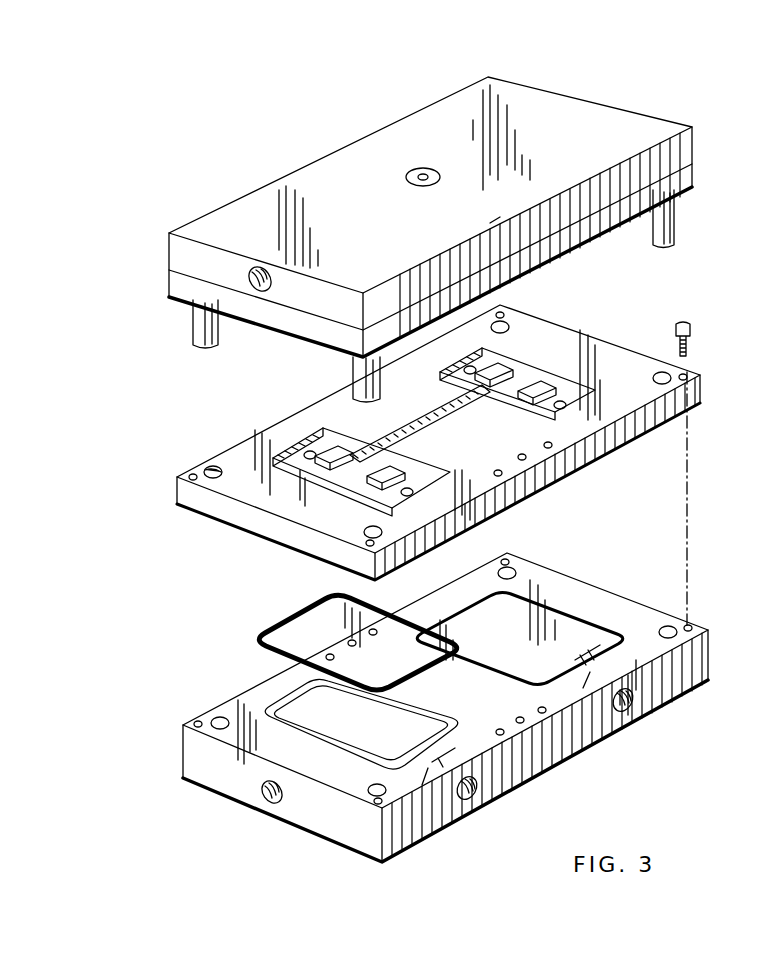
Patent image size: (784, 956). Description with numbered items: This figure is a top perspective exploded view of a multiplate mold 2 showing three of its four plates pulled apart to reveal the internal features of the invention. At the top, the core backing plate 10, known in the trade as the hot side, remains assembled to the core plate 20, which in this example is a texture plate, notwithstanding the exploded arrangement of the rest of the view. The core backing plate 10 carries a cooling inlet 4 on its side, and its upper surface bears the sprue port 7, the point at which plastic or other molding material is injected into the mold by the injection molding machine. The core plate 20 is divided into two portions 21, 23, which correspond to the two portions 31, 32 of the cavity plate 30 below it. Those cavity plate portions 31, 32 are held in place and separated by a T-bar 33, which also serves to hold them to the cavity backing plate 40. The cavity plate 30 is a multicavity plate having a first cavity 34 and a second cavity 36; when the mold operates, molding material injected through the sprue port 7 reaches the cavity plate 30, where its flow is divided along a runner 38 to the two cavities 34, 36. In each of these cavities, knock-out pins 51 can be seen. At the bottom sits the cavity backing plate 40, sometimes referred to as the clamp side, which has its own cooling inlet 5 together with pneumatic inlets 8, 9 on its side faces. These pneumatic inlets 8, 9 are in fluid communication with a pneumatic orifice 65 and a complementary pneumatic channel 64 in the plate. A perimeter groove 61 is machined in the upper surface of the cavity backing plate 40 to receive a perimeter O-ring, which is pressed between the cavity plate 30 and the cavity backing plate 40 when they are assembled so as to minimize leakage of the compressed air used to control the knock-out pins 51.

The multiplate mold 2 is at (280, 152).
The cooling inlet 4 is at (258, 268).
The cooling inlet 5 is at (270, 803).
The sprue port 7 is at (421, 176).
The pneumatic inlet 8 is at (472, 798).
The pneumatic inlet 9 is at (632, 712).
The core backing plate 10 is at (645, 118).
The core plate 20 is at (711, 176).
The core plate portion 21 is at (510, 262).
The core plate portion 23 is at (605, 218).
The cavity plate 30 is at (270, 545).
The cavity plate portion 31 is at (497, 507).
The cavity plate portion 32 is at (573, 458).
The T-bar 33 is at (540, 490).
The first cavity 34 is at (325, 448).
The second cavity 36 is at (540, 375).
The runner 38 is at (395, 445).
The cavity backing plate 40 is at (365, 833).
The knock-out pins 51 is at (485, 363).
The perimeter groove 61 is at (287, 728).
The pneumatic channel 64 is at (445, 748).
The pneumatic orifice 65 is at (585, 690).